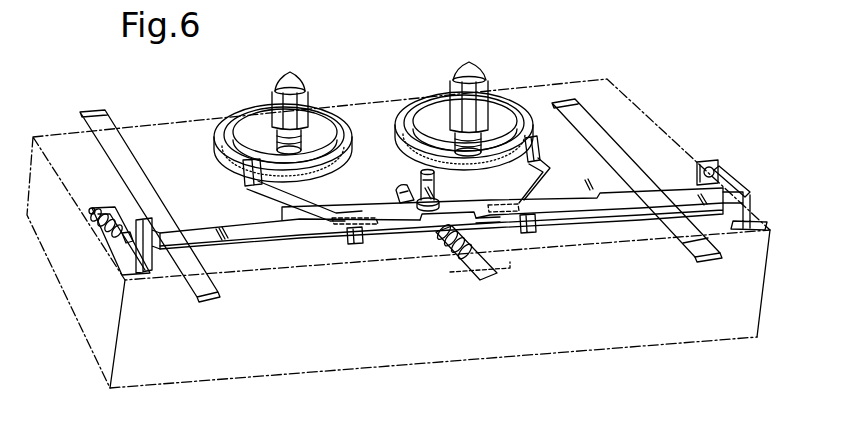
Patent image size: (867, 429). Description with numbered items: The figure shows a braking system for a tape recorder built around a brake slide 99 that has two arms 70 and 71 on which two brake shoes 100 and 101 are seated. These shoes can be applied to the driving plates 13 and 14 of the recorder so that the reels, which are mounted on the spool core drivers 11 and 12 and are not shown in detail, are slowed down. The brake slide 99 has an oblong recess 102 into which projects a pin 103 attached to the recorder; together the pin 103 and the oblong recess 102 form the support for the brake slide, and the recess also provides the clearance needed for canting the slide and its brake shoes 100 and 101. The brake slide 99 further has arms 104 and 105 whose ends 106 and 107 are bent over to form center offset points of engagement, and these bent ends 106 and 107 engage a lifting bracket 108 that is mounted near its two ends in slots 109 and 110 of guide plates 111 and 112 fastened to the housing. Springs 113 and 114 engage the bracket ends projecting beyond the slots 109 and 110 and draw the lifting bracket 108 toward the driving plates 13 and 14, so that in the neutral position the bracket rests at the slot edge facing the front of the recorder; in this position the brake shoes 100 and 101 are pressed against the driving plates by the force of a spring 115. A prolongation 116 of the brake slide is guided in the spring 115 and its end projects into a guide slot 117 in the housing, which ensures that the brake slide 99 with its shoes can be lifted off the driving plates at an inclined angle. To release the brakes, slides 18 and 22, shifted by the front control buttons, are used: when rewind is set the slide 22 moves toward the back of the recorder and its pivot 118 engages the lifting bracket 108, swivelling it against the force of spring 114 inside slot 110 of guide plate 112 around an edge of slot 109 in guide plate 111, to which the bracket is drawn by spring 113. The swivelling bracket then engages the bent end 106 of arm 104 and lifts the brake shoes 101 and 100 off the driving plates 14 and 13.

The spool core driver 11 is at (466, 66).
The spool core driver 12 is at (298, 80).
The driving plate 13 is at (422, 100).
The driving plate 14 is at (238, 118).
The slide 18 is at (106, 118).
The slide 22 is at (590, 115).
The arm 70 is at (272, 200).
The arm 71 is at (553, 184).
The brake slide 99 is at (451, 195).
The brake shoe 100 is at (244, 175).
The brake shoe 101 is at (540, 140).
The oblong recess 102 is at (398, 190).
The pin 103 is at (420, 178).
The arm 104 is at (392, 238).
The arm 105 is at (498, 237).
The bent end 106 is at (350, 246).
The bent end 107 is at (540, 226).
The lifting bracket 108 is at (200, 226).
The slot 109 is at (150, 268).
The slot 110 is at (737, 215).
The guide plate 111 is at (122, 258).
The guide plate 112 is at (752, 210).
The spring 113 is at (100, 226).
The spring 114 is at (710, 163).
The spring 115 is at (438, 240).
The prolongation 116 is at (487, 282).
The guide slot 117 is at (510, 282).
The pivot 118 is at (672, 218).